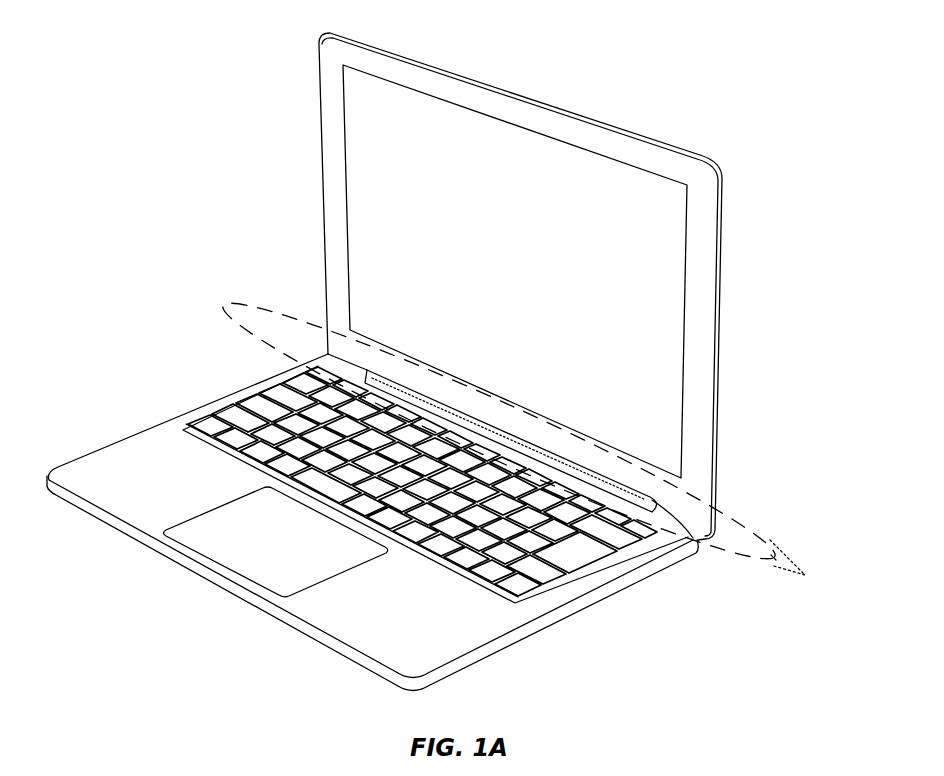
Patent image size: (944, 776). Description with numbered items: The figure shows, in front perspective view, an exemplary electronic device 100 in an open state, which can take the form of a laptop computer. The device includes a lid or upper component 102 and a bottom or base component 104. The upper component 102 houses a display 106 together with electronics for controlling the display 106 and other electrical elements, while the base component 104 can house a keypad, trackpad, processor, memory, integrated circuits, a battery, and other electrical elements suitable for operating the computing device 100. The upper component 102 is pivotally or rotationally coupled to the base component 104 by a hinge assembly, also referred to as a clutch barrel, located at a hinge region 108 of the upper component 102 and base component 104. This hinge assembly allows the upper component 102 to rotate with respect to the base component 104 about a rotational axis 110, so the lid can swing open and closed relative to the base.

The electronic device 100 is at (436, 355).
The upper component 102 is at (723, 299).
The base component 104 is at (560, 618).
The display 106 is at (551, 269).
The hinge region 108 is at (773, 525).
The rotational axis 110 is at (717, 537).